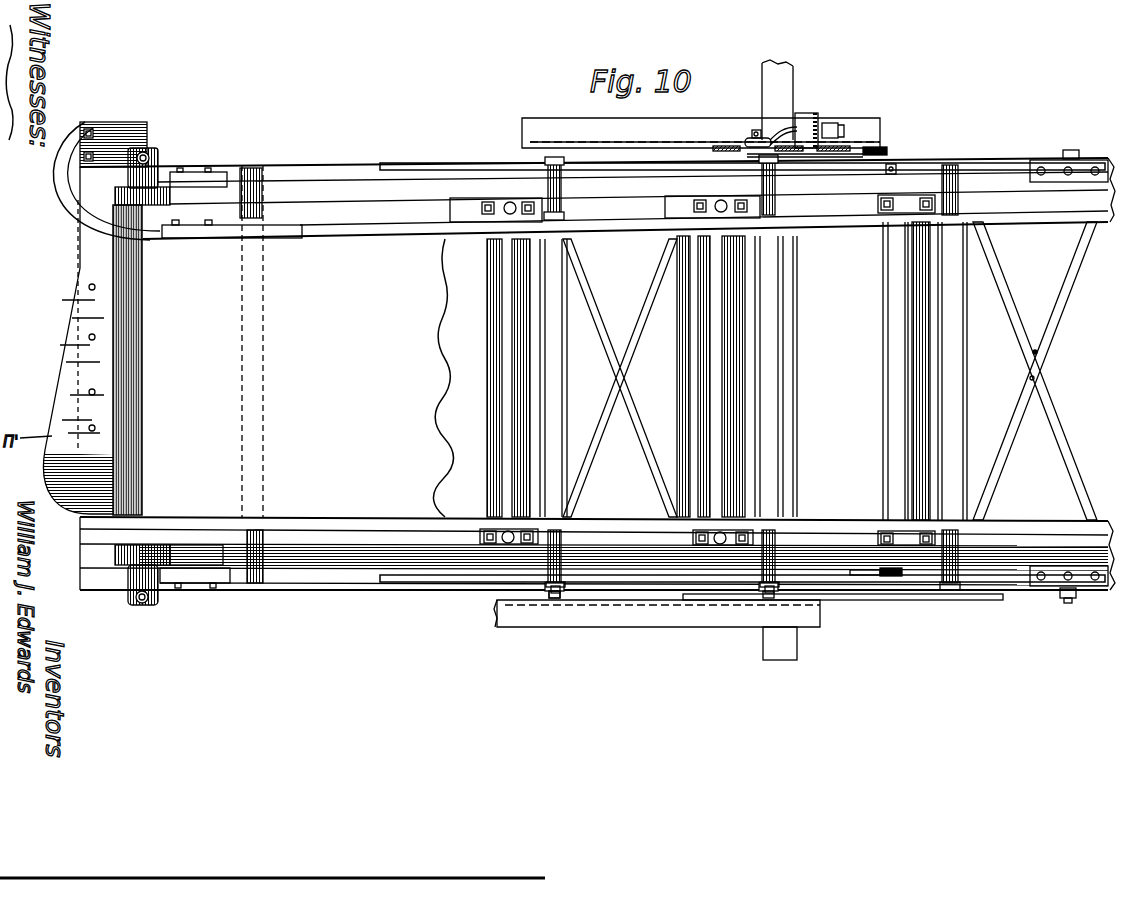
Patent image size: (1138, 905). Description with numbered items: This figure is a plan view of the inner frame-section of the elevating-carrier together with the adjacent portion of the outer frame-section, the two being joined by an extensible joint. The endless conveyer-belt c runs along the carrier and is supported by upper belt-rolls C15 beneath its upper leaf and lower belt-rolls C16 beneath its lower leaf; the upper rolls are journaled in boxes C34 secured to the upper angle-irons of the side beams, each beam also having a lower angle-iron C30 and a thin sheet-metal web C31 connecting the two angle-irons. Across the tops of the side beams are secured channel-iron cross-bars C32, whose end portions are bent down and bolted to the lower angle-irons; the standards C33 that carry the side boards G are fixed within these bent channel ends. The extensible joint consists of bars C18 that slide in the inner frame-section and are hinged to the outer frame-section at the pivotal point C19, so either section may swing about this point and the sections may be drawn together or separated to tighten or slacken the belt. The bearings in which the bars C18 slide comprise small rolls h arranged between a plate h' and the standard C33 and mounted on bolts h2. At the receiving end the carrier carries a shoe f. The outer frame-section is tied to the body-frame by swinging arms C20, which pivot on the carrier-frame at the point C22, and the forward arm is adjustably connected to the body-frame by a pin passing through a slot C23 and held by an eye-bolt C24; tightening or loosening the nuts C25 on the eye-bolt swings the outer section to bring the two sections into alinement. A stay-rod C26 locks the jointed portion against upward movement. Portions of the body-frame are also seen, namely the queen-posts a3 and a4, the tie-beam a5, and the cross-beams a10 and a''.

The cross-beam a10 is at (546, 128).
The swinging bars or arms C20 is at (755, 130).
The eye-bolt C24 is at (782, 135).
The queen-post a4 is at (816, 115).
The slot C23 is at (745, 140).
The nuts C25 is at (842, 130).
The pivotal point of connection C19 is at (890, 152).
The lower angle-iron C30 is at (325, 178).
The web or strip of sheet metal C31 is at (352, 188).
The bars C18 is at (466, 160).
The boxes C34 is at (510, 203).
The side boards G is at (348, 230).
The cross-bars C32 is at (550, 270).
The shoe f is at (93, 273).
The upper belt-rolls C15 is at (494, 388).
The lower belt-rolls C16 is at (690, 398).
The endless conveyer-belt c is at (283, 361).
The standards or supports C33 is at (258, 560).
The small rolls h is at (662, 625).
The plate h' is at (644, 632).
The bolts h2 is at (552, 600).
The cross-beam a'' is at (657, 632).
The tie rod or beam a5 is at (786, 655).
The queen-post a3 is at (888, 602).
The pivot point C22 is at (1090, 585).
The stay-rod C26 is at (1063, 600).